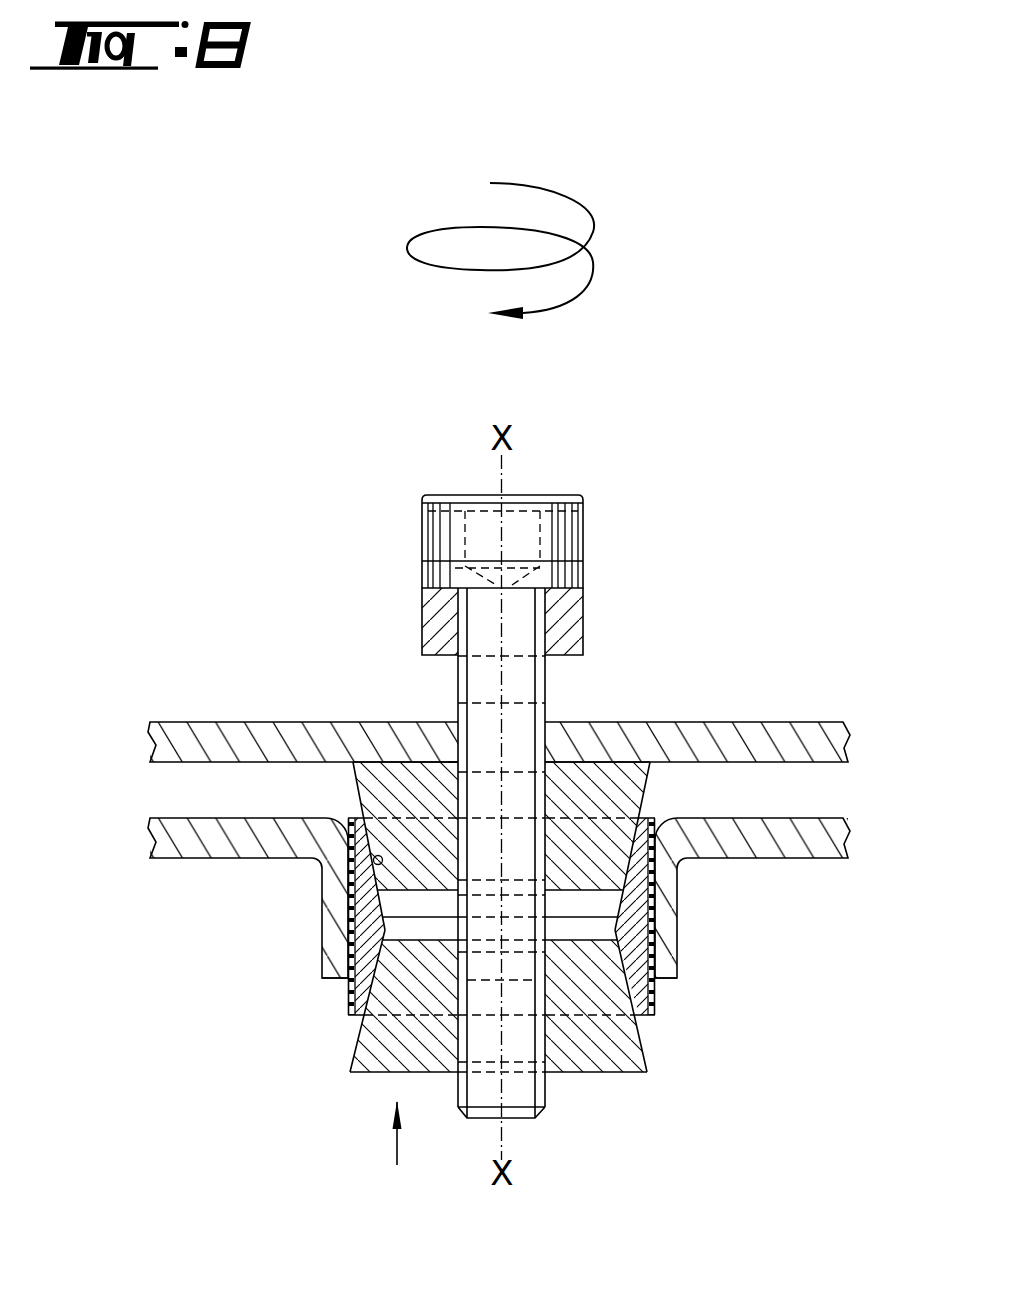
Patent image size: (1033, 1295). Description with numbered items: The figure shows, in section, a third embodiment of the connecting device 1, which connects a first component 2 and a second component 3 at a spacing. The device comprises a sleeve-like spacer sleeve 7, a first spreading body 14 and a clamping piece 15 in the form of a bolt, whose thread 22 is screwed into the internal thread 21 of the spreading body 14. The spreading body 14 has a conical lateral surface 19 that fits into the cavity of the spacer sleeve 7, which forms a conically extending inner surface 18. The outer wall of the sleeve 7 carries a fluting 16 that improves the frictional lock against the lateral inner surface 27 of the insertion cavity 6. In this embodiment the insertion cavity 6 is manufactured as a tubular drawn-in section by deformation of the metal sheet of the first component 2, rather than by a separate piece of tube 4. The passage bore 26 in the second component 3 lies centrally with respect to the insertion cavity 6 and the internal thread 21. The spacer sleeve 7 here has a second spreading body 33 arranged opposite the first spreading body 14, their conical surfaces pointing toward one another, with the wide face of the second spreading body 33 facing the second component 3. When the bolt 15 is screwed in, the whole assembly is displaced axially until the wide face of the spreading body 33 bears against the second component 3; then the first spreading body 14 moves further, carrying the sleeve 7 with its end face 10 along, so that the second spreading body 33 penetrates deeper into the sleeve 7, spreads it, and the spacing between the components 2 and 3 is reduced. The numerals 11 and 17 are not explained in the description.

The connecting device 1 is at (218, 636).
The first component 2 is at (823, 858).
The second component 3 is at (772, 722).
The piece of tube 4 is at (663, 967).
The insertion cavity 6 is at (652, 893).
The spacer sleeve 7 is at (347, 920).
The end face 10 is at (352, 818).
The lower body portion 11 is at (642, 1017).
The spreading body 14 is at (618, 1077).
The clamping piece 15 is at (583, 537).
The fluting 16 is at (352, 1000).
The collar lower end 17 is at (347, 962).
The conically extending inner surface 18 is at (615, 893).
The conical lateral surface 19 is at (350, 874).
The internal thread 21 is at (540, 978).
The thread 22 is at (540, 708).
The passage bore 26 is at (452, 750).
The lateral inner surface 27 is at (372, 860).
The second spreading body 33 is at (612, 800).